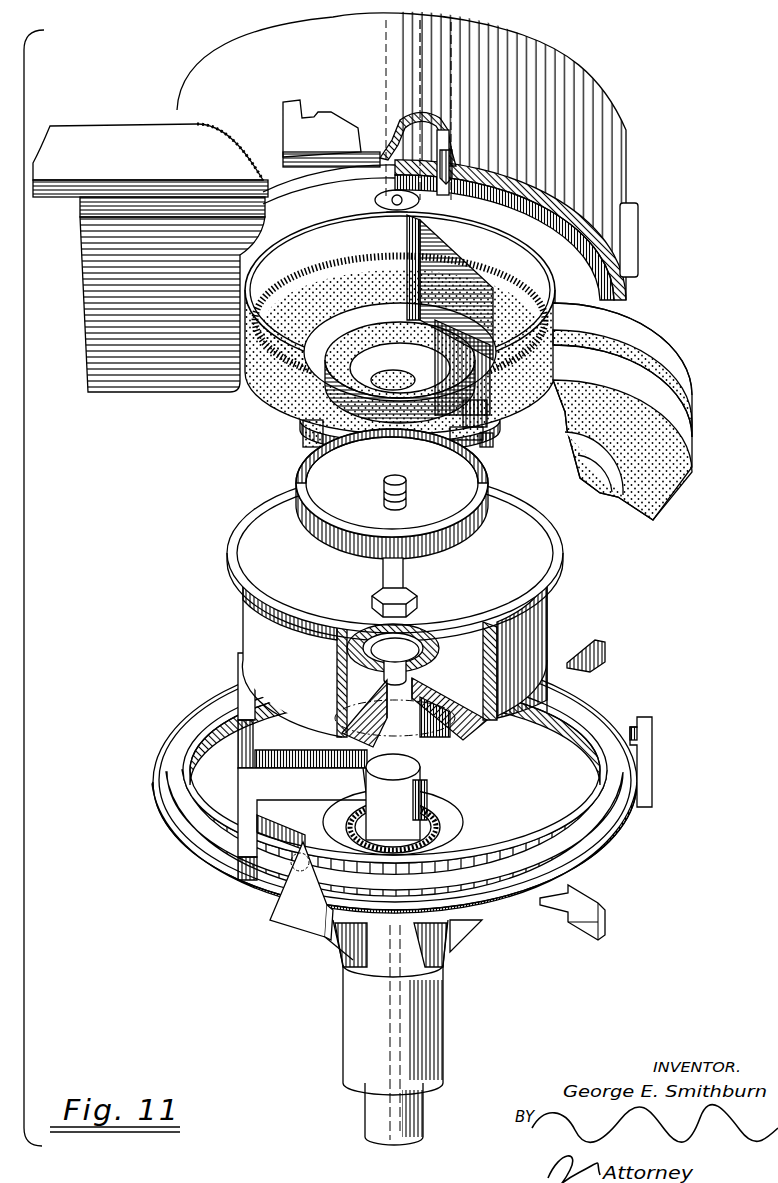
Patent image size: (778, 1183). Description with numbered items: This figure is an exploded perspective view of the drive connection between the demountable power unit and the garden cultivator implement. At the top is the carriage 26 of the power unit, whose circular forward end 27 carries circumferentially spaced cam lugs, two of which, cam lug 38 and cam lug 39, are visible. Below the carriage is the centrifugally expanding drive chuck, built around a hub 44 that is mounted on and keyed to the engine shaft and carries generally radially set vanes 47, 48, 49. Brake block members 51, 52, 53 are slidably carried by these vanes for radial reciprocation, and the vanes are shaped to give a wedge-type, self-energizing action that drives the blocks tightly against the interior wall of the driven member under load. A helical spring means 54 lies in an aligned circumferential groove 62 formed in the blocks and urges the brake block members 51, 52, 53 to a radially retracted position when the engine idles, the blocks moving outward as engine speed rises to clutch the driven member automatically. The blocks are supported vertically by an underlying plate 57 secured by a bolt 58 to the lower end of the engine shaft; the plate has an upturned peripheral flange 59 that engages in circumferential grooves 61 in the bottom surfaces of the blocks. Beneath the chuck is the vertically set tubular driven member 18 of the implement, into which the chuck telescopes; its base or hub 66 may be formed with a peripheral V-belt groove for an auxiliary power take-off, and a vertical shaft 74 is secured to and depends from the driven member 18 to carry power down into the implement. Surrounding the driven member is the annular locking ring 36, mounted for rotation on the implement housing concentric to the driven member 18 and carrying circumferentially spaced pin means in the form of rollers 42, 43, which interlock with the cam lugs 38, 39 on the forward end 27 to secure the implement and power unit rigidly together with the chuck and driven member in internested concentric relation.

The tubular driven member 18 is at (246, 622).
The carriage 26 is at (100, 115).
The forward end of the carriage 27 is at (625, 150).
The annular locking ring 36 is at (612, 830).
The cam lug 38 is at (643, 238).
The cam lug 39 is at (290, 122).
The pin means (roller) 42 is at (637, 720).
The pin means (roller) 43 is at (295, 870).
The hub 44 is at (285, 410).
The vane 47 is at (470, 428).
The vane 48 is at (312, 425).
The vane 49 is at (398, 243).
The brake block member 51 is at (470, 445).
The brake block member 52 is at (655, 352).
The brake block member 53 is at (395, 330).
The spring means 54 is at (530, 327).
The plate 57 is at (453, 500).
The bolt 58 is at (398, 586).
The upturned peripheral flange 59 is at (490, 474).
The circumferential groove 61 is at (473, 410).
The circumferential groove 62 is at (673, 380).
The base or hub of the driven member 66 is at (443, 720).
The vertical shaft 74 is at (385, 780).